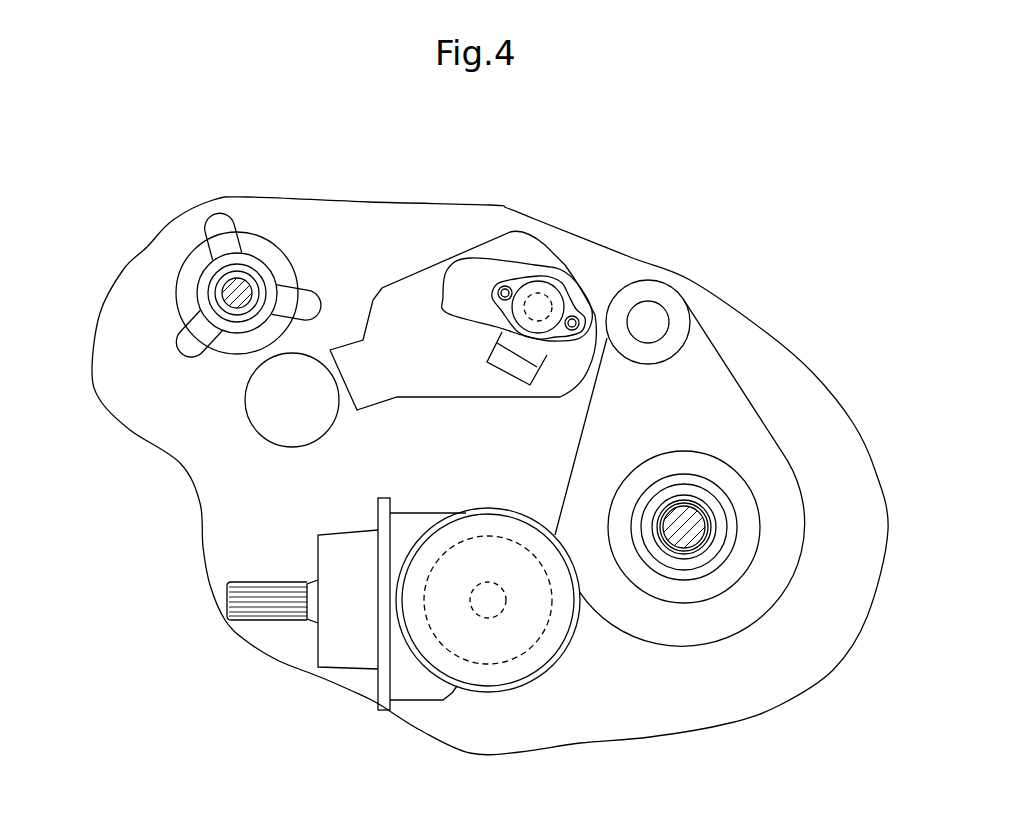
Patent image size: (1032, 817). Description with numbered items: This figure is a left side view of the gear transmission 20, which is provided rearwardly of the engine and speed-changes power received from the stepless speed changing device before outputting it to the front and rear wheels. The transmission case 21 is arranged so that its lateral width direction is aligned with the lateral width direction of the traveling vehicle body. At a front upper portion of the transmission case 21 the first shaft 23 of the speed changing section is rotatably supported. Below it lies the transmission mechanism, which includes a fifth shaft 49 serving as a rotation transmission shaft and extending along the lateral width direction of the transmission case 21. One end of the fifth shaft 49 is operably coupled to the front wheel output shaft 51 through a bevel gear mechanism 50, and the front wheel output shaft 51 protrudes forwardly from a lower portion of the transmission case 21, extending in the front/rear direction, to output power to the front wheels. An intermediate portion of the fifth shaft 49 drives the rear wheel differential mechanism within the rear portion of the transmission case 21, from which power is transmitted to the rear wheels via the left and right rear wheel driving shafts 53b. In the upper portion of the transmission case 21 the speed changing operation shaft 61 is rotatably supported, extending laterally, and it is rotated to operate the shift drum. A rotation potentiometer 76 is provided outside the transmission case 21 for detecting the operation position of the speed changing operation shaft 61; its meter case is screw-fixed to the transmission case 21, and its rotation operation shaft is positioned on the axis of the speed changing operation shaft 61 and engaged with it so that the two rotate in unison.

The gear transmission 20 is at (148, 170).
The transmission case 21 is at (757, 348).
The first shaft 23 is at (228, 293).
The fifth shaft 49 is at (503, 606).
The bevel gear mechanism 50 is at (503, 547).
The front wheel output shaft 51 is at (283, 612).
The rear wheel driving shaft 53b is at (681, 510).
The speed changing operation shaft 61 is at (527, 268).
The rotation potentiometer 76 is at (557, 300).